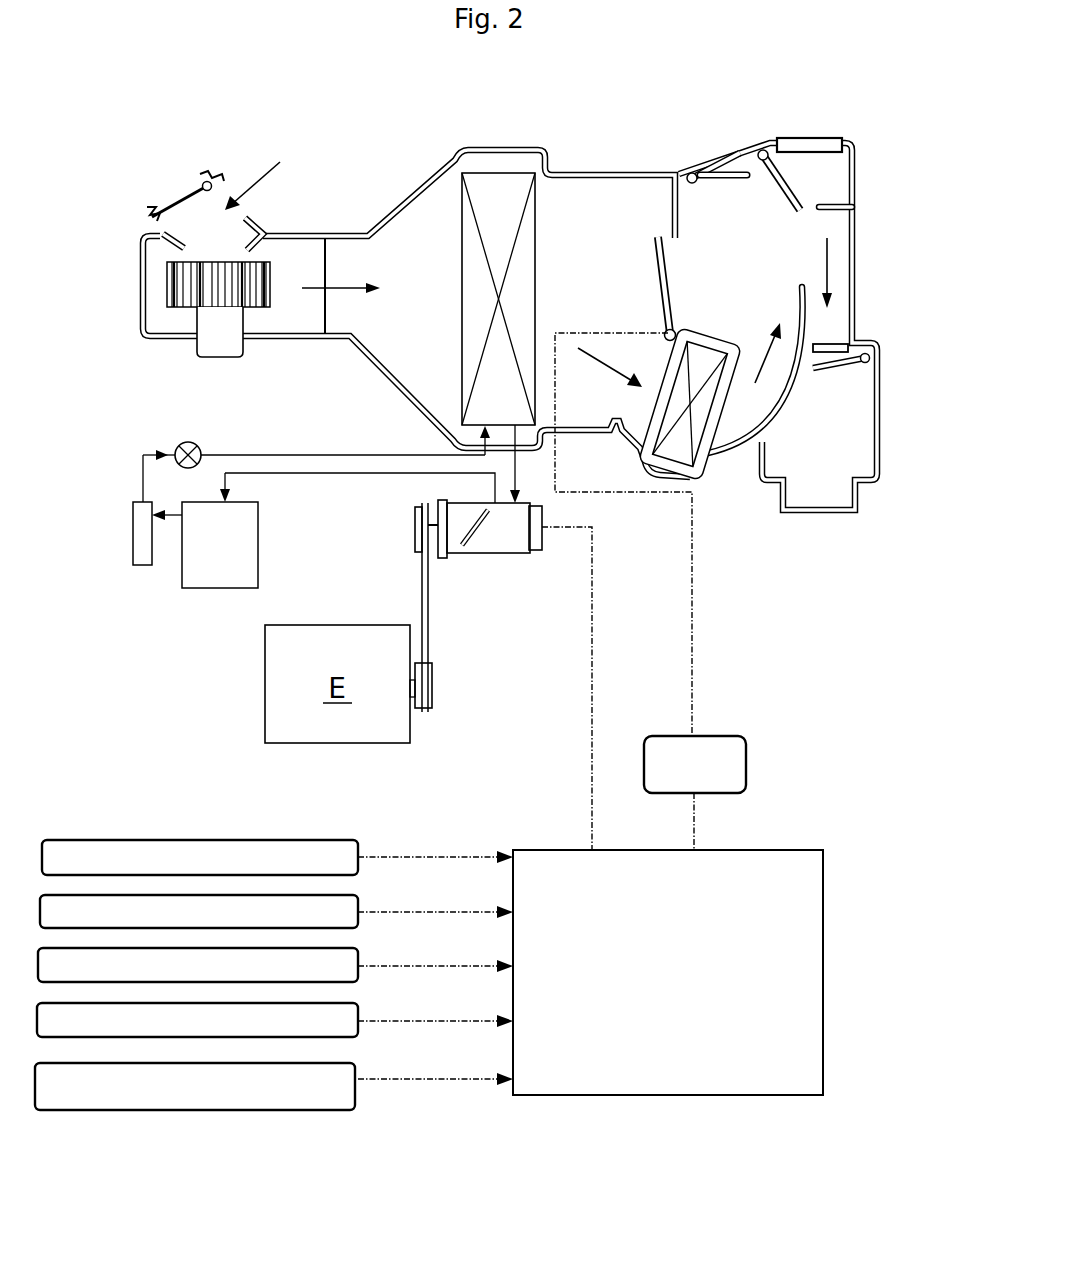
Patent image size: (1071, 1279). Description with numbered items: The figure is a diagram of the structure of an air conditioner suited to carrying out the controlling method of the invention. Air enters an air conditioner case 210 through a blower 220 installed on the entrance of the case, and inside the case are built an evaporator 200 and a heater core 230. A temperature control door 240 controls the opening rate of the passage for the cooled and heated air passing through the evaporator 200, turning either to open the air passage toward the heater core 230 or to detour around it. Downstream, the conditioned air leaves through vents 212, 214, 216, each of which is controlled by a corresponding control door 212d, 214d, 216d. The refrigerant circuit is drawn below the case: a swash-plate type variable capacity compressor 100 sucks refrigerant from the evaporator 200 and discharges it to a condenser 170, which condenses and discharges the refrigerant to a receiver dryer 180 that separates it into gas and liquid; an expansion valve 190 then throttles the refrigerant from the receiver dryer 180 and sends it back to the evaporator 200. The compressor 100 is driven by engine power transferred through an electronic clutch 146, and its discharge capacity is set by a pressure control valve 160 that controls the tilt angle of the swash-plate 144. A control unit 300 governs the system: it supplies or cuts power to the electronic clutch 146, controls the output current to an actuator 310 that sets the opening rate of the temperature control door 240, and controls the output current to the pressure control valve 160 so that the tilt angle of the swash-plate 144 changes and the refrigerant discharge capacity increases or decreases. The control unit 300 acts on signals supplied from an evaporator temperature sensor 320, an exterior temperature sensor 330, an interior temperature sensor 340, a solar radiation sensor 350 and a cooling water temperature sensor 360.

The swash-plate type variable capacity compressor 100 is at (494, 611).
The swash-plate 144 is at (470, 560).
The electronic clutch 146 is at (440, 558).
The pressure control valve 160 is at (537, 557).
The condenser 170 is at (217, 578).
The receiver dryer 180 is at (133, 560).
The expansion valve 190 is at (198, 437).
The evaporator 200 is at (510, 183).
The air conditioner case 210 is at (604, 173).
The vent 212 is at (713, 160).
The control door 212d is at (720, 182).
The vent 214 is at (810, 145).
The control door 214d is at (788, 188).
The vent 216 is at (830, 348).
The control door 216d is at (830, 372).
The blower 220 is at (187, 338).
The heater core 230 is at (682, 445).
The temperature control door 240 is at (657, 260).
The control unit 300 is at (809, 935).
The actuator 310 is at (738, 762).
The evaporator temperature sensor 320 is at (352, 846).
The exterior temperature sensor 330 is at (352, 900).
The interior temperature sensor 340 is at (352, 954).
The solar radiation sensor 350 is at (352, 1008).
The cooling water temperature sensor 360 is at (350, 1066).